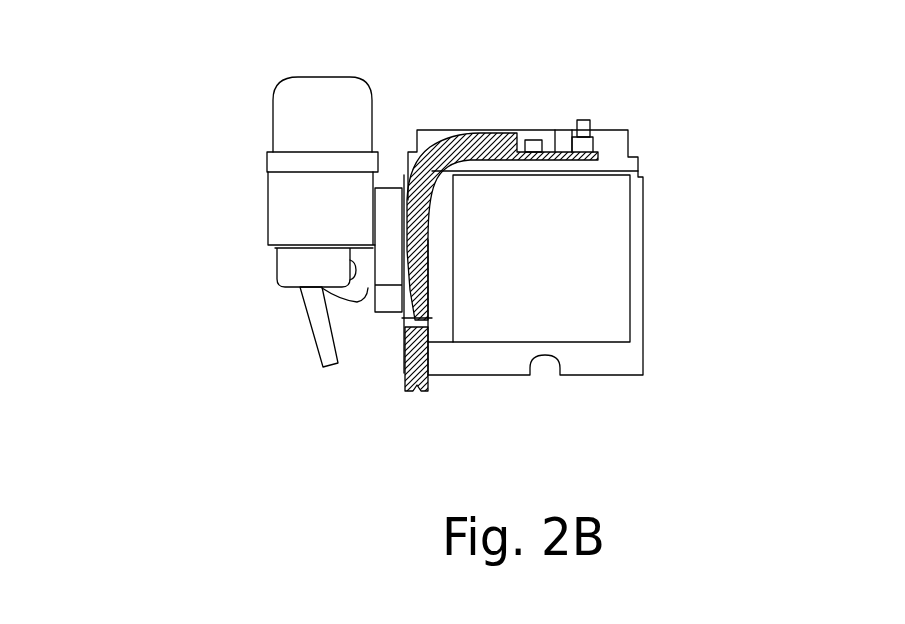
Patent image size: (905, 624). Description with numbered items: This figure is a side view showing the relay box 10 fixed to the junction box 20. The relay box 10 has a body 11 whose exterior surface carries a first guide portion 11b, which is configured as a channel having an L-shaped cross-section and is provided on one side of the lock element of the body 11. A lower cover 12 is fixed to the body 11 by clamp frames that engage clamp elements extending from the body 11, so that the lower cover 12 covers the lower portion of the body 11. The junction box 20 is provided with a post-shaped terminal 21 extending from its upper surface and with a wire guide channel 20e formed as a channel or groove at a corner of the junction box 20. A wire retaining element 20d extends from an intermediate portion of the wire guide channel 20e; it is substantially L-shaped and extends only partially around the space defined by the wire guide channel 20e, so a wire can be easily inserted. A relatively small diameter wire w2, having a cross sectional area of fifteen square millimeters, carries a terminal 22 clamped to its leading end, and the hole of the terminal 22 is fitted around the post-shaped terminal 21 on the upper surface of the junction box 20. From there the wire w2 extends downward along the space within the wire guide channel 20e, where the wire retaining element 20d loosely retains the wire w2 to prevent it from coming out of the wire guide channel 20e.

The relay box 10 is at (234, 221).
The body 11 is at (277, 233).
The first guide portion 11b is at (385, 213).
The lower cover 12 is at (283, 271).
The junction box 20 is at (530, 244).
The wire retaining element 20d is at (400, 318).
The wire guide channel 20e is at (448, 236).
The post-shaped terminal 21 is at (583, 120).
The terminal 22 is at (558, 128).
The wire w2 is at (432, 130).